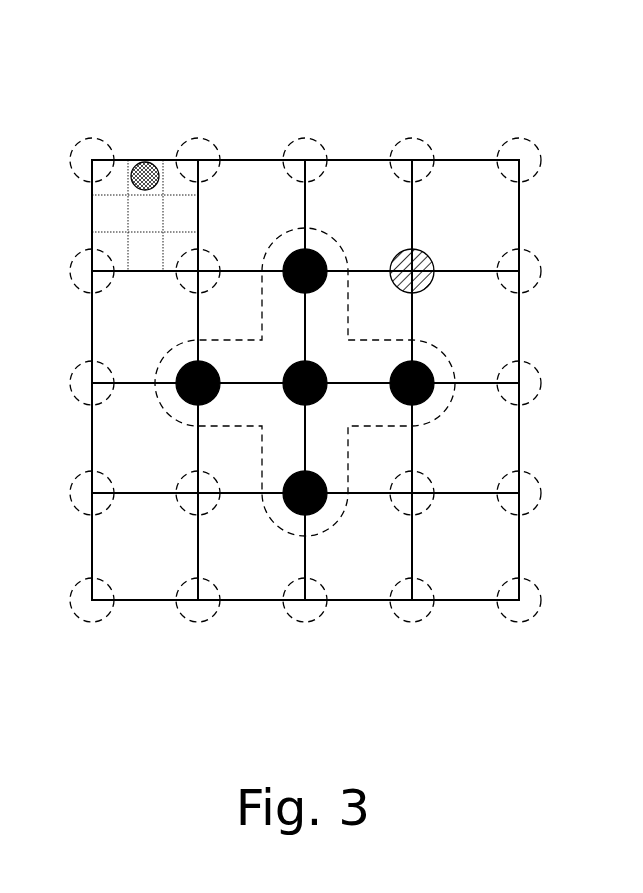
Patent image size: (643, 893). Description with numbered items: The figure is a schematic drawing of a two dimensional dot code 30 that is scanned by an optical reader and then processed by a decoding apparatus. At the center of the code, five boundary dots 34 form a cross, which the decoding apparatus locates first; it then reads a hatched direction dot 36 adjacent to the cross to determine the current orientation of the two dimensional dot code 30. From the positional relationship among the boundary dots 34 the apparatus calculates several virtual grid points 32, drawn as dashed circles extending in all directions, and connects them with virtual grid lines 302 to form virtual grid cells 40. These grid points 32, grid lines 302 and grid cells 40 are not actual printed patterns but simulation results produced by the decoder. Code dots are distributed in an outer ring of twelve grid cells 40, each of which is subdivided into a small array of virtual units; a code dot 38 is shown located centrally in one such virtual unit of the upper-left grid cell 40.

The two dimensional dot code 30 is at (522, 98).
The virtual grid points 32 is at (540, 262).
The virtual grid lines 302 is at (521, 345).
The boundary dots 34 is at (430, 401).
The direction dot 36 is at (428, 261).
The code dot 38 is at (145, 161).
The virtual grid cells 40 is at (87, 212).